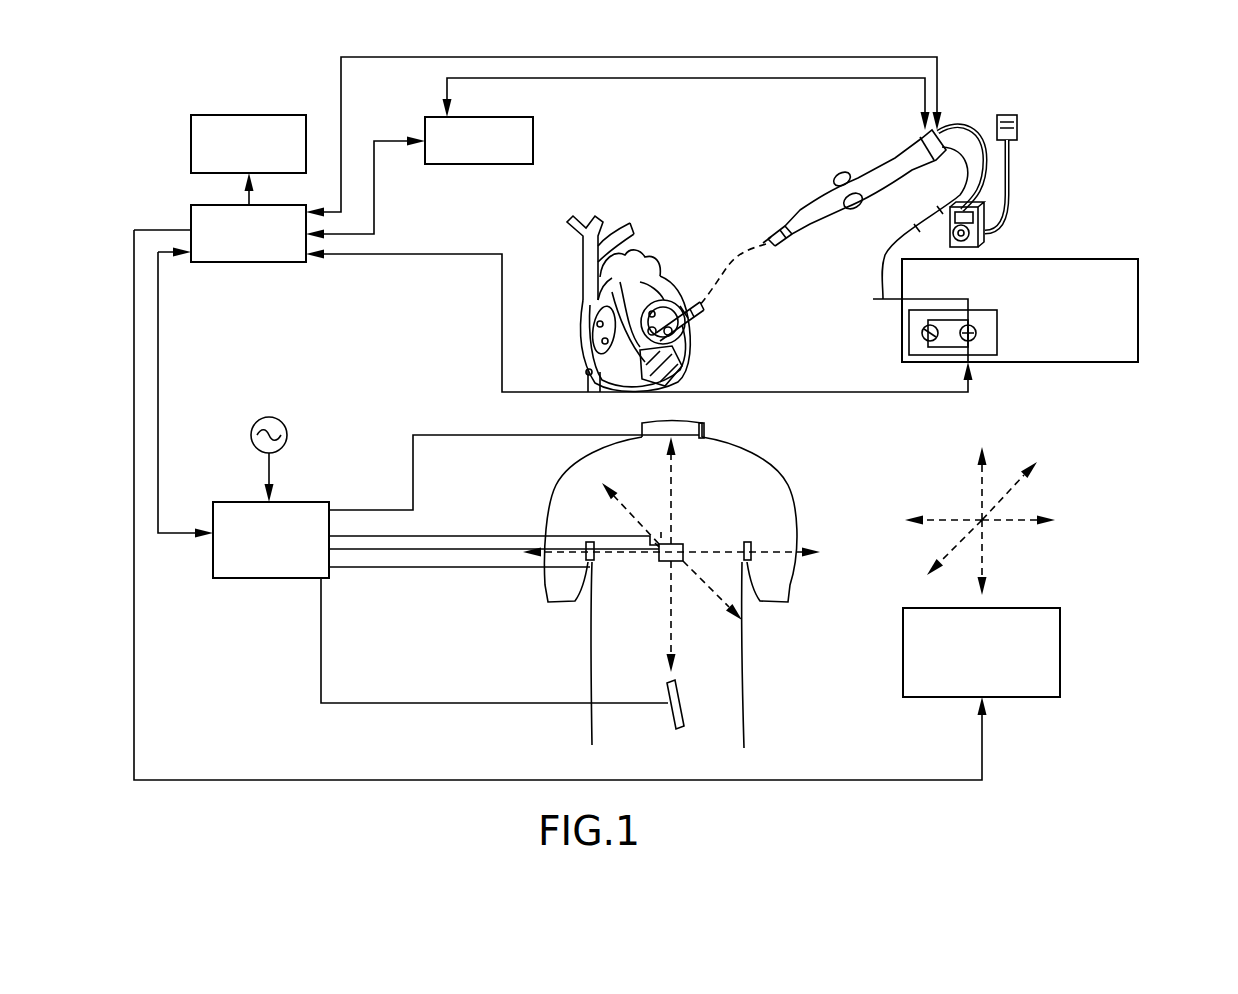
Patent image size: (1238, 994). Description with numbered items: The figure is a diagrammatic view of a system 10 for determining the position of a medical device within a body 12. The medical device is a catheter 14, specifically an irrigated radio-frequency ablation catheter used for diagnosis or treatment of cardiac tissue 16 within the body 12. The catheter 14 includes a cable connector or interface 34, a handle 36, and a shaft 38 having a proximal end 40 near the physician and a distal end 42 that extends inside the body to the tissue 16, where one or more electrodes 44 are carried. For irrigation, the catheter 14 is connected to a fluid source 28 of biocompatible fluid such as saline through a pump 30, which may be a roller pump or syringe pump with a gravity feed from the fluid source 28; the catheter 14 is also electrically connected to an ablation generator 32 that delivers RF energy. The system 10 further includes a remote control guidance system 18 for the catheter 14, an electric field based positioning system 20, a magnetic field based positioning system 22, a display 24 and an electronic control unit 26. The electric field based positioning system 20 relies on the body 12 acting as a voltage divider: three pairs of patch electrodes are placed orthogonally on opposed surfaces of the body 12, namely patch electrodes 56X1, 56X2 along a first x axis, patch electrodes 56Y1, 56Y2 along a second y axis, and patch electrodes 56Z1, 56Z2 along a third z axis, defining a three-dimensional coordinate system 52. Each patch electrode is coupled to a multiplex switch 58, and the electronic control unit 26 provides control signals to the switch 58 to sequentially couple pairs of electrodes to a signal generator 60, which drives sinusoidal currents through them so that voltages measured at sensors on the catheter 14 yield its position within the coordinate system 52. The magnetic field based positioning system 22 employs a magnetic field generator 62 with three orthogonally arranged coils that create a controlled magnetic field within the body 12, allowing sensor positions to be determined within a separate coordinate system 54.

The system 10 is at (256, 86).
The body 12 is at (744, 686).
The catheter 14 is at (851, 142).
The cardiac tissue 16 is at (683, 365).
The remote control guidance system (RCGS) 18 is at (533, 141).
The electric field based positioning system 20 is at (257, 667).
The magnetic field based positioning system 22 is at (870, 724).
The display 24 is at (191, 130).
The electronic control unit (ECU) 26 is at (191, 220).
The fluid source 28 is at (1017, 131).
The pump 30 is at (990, 215).
The ablation generator 32 is at (1138, 345).
The cable connector or interface 34 is at (931, 156).
The handle 36 is at (886, 157).
The shaft 38 is at (768, 231).
The proximal end 40 is at (793, 254).
The distal end 42 is at (718, 318).
The electrodes 44 is at (669, 281).
The coordinate system 52 is at (828, 488).
The coordinate system 54 is at (1114, 468).
The patch electrode 56X1 is at (586, 602).
The patch electrode 56X2 is at (750, 598).
The patch electrode 56Y1 is at (705, 430).
The patch electrode 56Y2 is at (668, 712).
The patch electrode 56Z1 is at (668, 543).
The patch electrode 56Z2 is at (648, 535).
The switch 58 is at (233, 578).
The signal generator 60 is at (251, 430).
The magnetic field generator 62 is at (1035, 697).